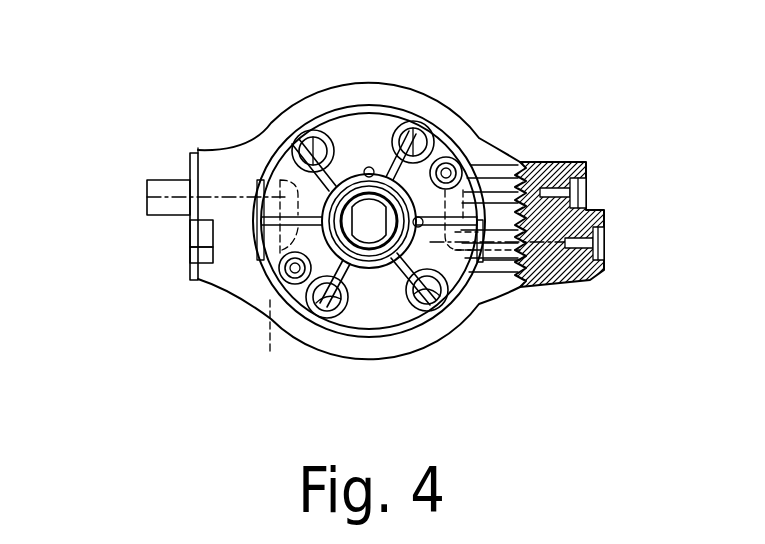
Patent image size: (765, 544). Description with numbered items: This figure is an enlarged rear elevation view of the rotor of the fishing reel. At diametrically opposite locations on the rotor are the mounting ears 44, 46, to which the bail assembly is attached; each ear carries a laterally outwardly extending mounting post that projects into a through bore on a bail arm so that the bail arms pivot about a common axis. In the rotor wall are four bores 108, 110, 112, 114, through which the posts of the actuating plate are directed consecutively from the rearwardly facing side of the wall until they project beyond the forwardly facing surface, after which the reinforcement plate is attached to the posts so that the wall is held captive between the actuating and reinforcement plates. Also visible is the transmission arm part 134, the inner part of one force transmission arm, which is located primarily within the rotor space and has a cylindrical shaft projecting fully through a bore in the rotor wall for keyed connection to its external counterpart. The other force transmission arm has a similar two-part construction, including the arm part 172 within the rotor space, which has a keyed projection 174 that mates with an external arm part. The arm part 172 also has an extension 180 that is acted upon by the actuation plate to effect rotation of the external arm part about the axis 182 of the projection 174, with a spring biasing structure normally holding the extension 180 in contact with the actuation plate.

The mounting ear 44 is at (527, 158).
The mounting ear 46 is at (215, 148).
The bore 108 is at (340, 310).
The bore 110 is at (313, 140).
The bore 112 is at (415, 135).
The bore 114 is at (432, 305).
The transmission arm part 134 is at (470, 153).
The arm part 172 is at (280, 165).
The keyed projection 174 is at (168, 178).
The extension 180 is at (273, 351).
The axis 182 is at (190, 232).